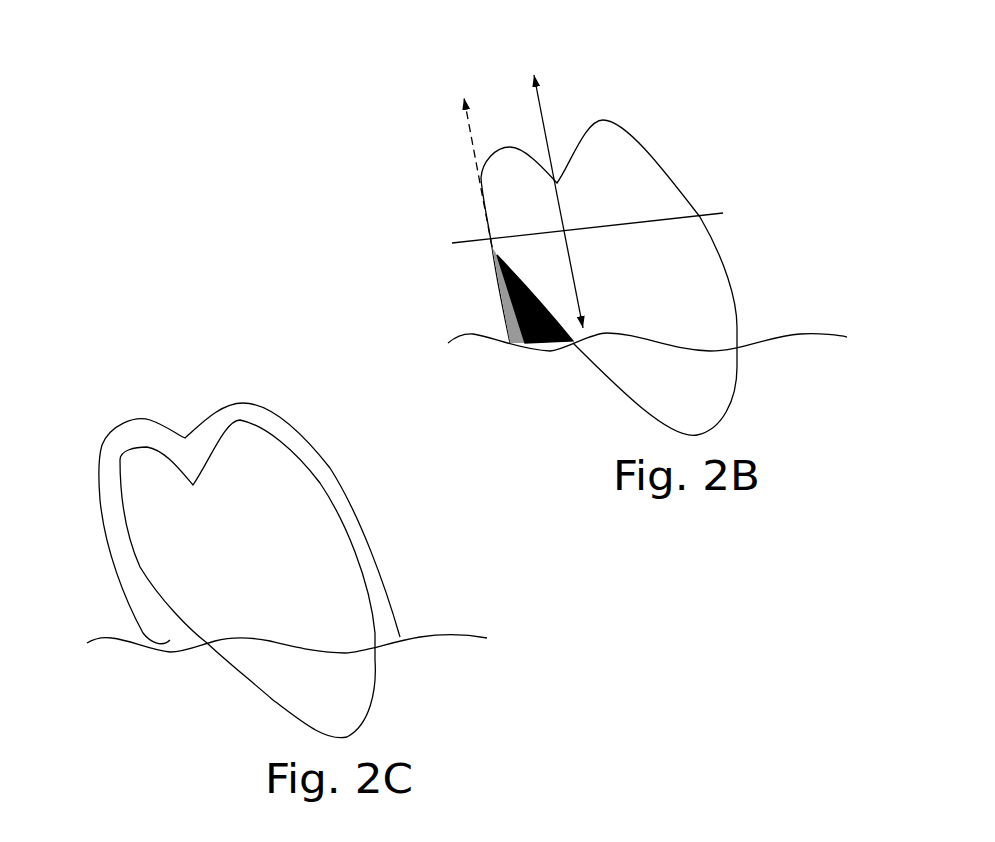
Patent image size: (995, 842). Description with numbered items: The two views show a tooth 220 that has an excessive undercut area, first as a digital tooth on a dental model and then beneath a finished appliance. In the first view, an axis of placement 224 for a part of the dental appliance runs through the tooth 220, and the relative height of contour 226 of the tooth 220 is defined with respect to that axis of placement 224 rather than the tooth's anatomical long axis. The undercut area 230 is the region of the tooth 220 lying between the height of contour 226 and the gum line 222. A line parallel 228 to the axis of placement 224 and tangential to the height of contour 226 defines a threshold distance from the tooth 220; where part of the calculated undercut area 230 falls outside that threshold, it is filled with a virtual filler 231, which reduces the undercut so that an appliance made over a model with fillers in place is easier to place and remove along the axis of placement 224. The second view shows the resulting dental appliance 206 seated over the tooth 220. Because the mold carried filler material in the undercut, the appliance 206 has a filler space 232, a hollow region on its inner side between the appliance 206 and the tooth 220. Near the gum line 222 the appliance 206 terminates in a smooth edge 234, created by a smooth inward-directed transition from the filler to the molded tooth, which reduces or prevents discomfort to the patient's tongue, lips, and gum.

In FIG. 2B, the tooth 220 is at (418, 92).
In FIG. 2C, the tooth 220 is at (108, 370).
In FIG. 2B, the gum line 222 is at (783, 328).
In FIG. 2C, the gum line 222 is at (420, 630).
In FIG. 2B, the axis of placement 224 is at (540, 106).
In FIG. 2B, the relative height of contour 226 is at (708, 208).
In FIG. 2B, the line parallel to the axis of placement 228 is at (476, 168).
In FIG. 2B, the undercut area 230 is at (502, 296).
In FIG. 2B, the virtual filler 231 is at (547, 350).
In FIG. 2C, the dental appliance 206 is at (316, 444).
In FIG. 2C, the filler space 232 is at (150, 598).
In FIG. 2C, the smooth edge 234 is at (158, 652).